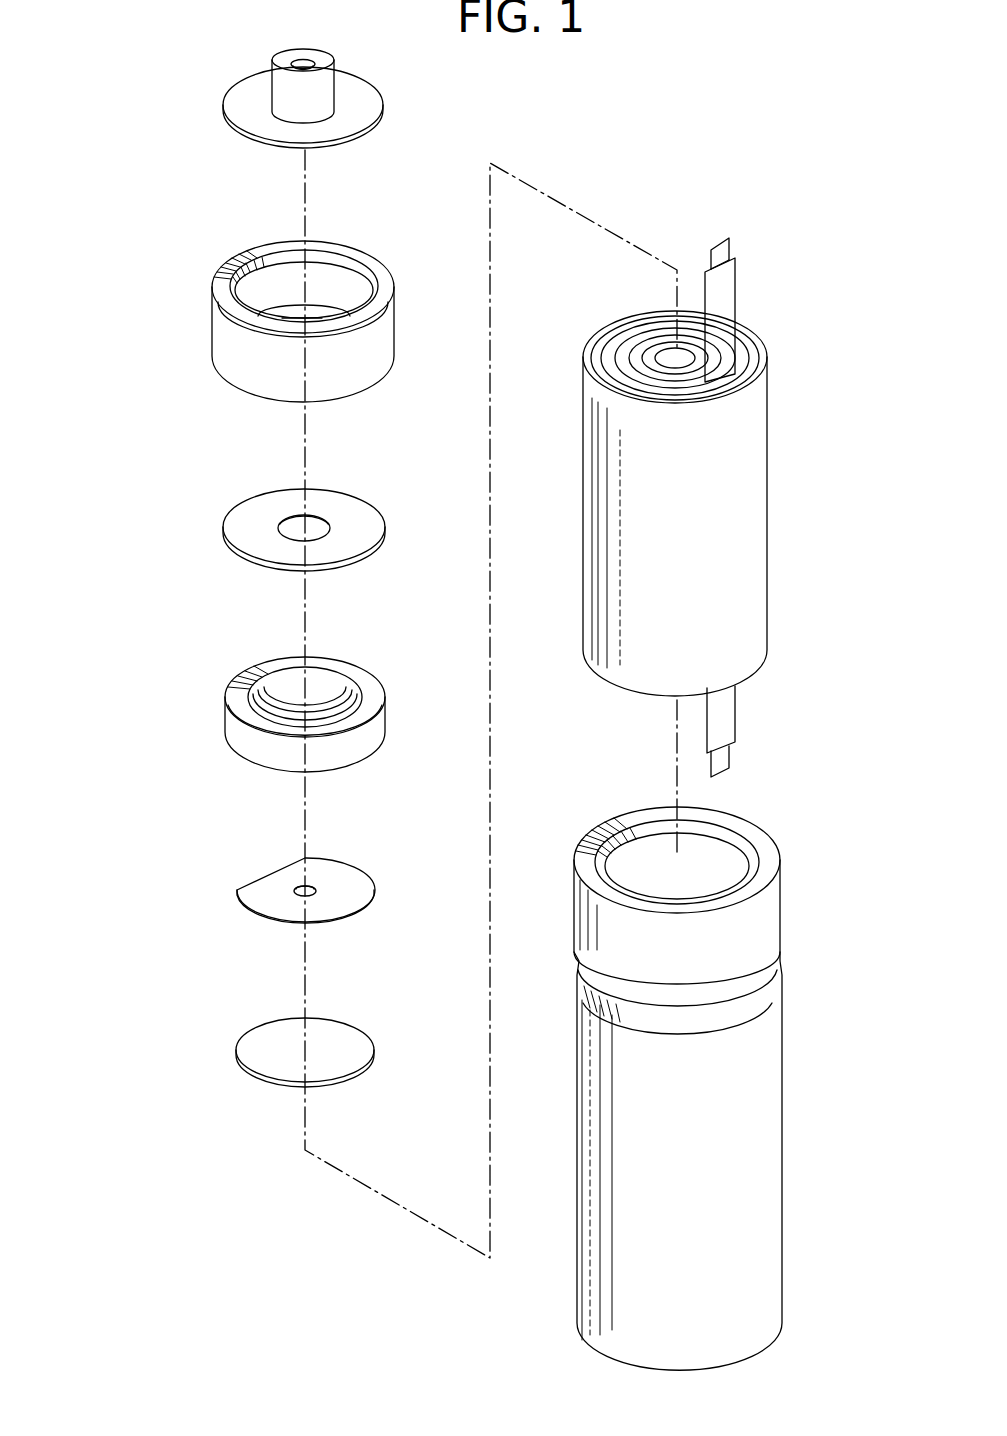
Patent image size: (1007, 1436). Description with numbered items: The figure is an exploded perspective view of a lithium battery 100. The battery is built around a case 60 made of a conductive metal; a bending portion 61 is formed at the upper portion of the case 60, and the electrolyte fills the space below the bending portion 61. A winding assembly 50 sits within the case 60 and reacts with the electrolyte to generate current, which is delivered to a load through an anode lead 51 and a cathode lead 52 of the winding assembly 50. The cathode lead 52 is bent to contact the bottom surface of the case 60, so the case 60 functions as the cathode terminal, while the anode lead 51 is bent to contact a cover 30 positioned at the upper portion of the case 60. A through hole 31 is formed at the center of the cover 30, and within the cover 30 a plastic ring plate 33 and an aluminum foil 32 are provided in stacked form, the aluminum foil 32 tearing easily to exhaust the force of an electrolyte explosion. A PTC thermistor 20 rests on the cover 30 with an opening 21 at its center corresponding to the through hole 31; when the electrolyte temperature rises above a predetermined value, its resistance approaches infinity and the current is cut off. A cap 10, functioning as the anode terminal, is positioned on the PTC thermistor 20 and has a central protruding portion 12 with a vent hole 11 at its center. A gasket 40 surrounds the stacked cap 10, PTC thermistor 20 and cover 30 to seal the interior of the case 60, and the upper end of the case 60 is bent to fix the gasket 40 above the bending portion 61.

The lithium battery 100 is at (150, 258).
The cap 10 is at (222, 113).
The vent hole 11 is at (291, 63).
The protruding portion 12 is at (271, 91).
The PTC thermistor 20 is at (223, 536).
The opening 21 is at (295, 530).
The cover 30 is at (225, 720).
The through hole 31 is at (297, 717).
The aluminum foil 32 is at (237, 898).
The ring plate 33 is at (236, 1057).
The gasket 40 is at (212, 327).
The winding assembly 50 is at (775, 478).
The anode lead 51 is at (736, 296).
The cathode lead 52 is at (737, 713).
The case 60 is at (727, 1215).
The bending portion 61 is at (720, 1000).